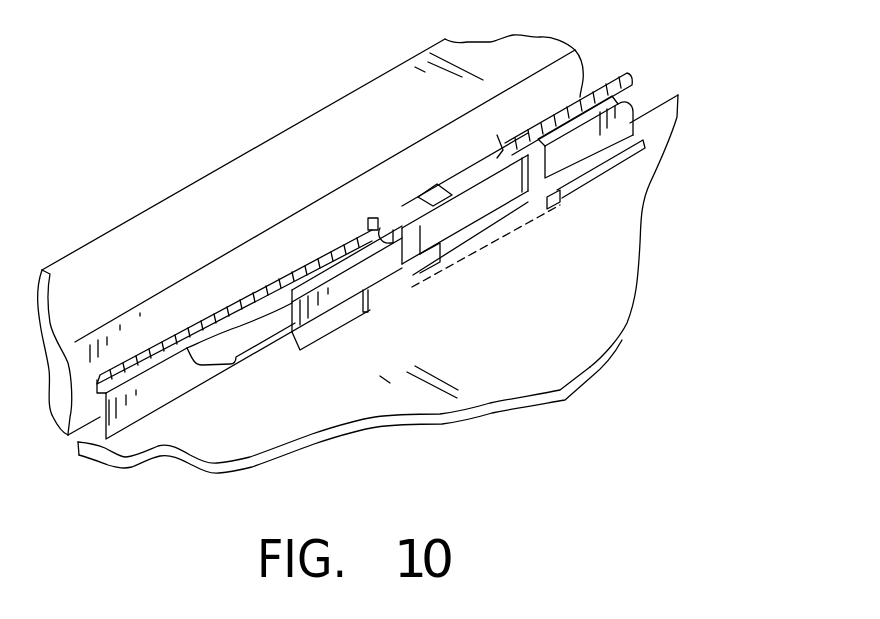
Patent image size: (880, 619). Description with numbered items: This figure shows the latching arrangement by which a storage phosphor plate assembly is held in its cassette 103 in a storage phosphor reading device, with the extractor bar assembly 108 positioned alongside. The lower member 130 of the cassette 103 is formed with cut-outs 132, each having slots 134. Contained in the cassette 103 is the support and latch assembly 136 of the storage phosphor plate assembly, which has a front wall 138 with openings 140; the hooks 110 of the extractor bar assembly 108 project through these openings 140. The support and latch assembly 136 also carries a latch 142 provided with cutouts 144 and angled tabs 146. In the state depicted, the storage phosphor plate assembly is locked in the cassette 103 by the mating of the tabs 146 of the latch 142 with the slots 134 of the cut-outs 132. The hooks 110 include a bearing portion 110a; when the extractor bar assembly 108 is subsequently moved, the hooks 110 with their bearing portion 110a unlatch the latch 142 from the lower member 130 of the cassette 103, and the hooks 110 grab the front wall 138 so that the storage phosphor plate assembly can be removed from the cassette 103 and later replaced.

The cassette 103 is at (658, 266).
The extractor bar assembly 108 is at (238, 108).
The hooks 110 is at (447, 175).
The bearing portion 110a is at (433, 238).
The lower member 130 is at (596, 345).
The cut-outs 132 is at (317, 333).
The slots 134 is at (612, 165).
The support and latch assembly 136 is at (668, 58).
The front wall 138 is at (295, 273).
The openings 140 is at (497, 140).
The latch 142 is at (178, 387).
The cutouts 144 is at (420, 247).
The angled tabs 146 is at (545, 195).